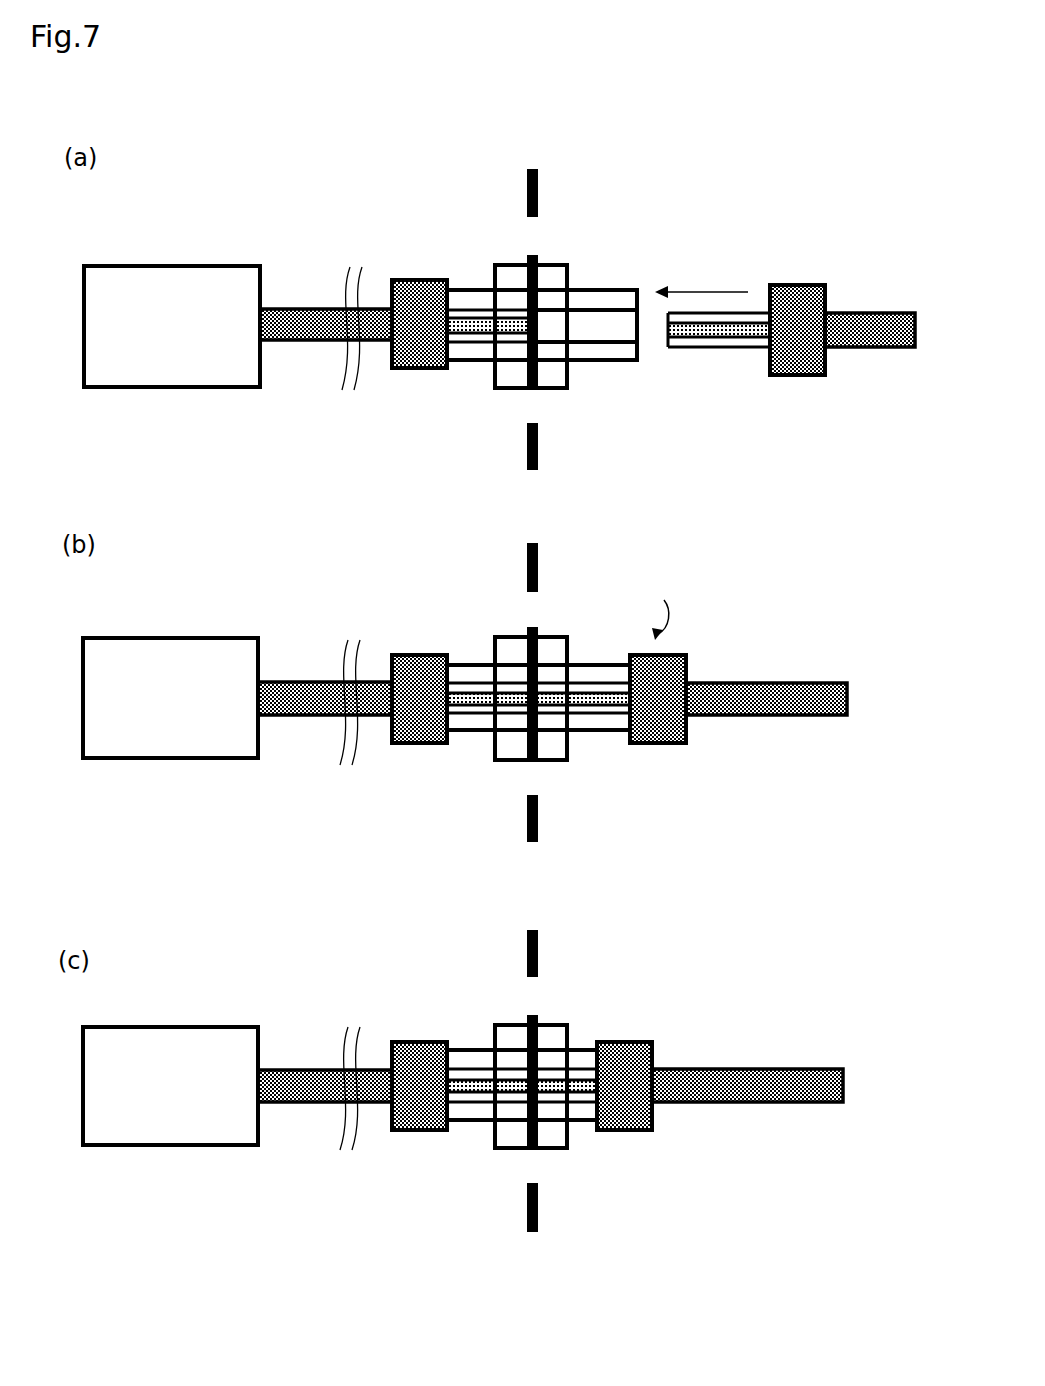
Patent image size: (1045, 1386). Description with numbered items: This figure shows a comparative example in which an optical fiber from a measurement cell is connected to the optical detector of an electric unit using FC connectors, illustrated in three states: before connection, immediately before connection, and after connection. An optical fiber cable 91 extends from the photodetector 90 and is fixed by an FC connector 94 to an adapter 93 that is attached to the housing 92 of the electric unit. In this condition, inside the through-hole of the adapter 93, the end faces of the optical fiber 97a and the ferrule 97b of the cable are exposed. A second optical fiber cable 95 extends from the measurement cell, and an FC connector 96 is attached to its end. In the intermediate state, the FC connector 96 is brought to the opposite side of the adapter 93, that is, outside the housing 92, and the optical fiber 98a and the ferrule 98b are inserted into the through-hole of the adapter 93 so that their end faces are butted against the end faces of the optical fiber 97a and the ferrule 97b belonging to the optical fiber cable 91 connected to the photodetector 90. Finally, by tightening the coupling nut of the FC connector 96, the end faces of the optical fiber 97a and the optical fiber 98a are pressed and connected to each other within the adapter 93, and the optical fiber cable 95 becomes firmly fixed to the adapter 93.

The photodetector 90 is at (198, 298).
The optical fiber cable 91 is at (315, 322).
The housing 92 is at (534, 257).
The adapter 93 is at (513, 285).
The FC connector 94 is at (425, 360).
The optical fiber cable 95 is at (862, 344).
The FC connector 96 is at (782, 358).
The optical fiber 97a is at (470, 328).
The ferrule 97b is at (487, 343).
The optical fiber 98a is at (703, 330).
The ferrule 98b is at (712, 340).